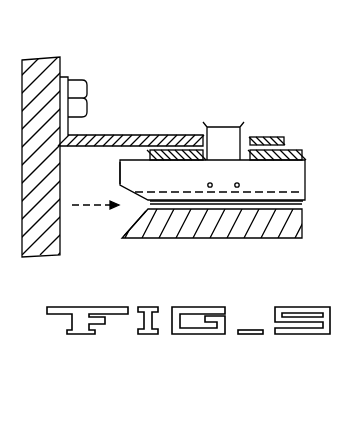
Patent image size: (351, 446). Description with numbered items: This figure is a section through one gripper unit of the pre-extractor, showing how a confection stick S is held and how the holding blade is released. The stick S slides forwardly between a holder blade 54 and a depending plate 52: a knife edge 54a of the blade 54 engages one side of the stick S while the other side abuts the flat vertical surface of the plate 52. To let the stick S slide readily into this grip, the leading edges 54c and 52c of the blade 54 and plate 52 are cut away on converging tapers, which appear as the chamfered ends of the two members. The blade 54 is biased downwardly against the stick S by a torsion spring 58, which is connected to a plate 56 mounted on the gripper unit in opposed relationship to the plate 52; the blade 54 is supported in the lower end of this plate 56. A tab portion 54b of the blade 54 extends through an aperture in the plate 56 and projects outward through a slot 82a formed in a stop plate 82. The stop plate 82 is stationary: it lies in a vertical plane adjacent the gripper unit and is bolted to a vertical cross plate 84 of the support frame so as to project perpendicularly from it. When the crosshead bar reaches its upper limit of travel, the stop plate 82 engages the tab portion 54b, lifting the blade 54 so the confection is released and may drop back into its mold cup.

The vertical cross plate 84 is at (60, 64).
The stop plate 82 is at (93, 135).
The slot 82a is at (209, 136).
The tab portion 54b is at (243, 125).
The holder blade 54 is at (305, 168).
The plate 56 is at (152, 151).
The torsion spring 58 is at (236, 182).
The leading edge of blade 54c is at (120, 190).
The knife edge 54a is at (262, 210).
The stick S is at (208, 212).
The depending plate 52 is at (145, 240).
The leading edge of plate 52c is at (140, 217).